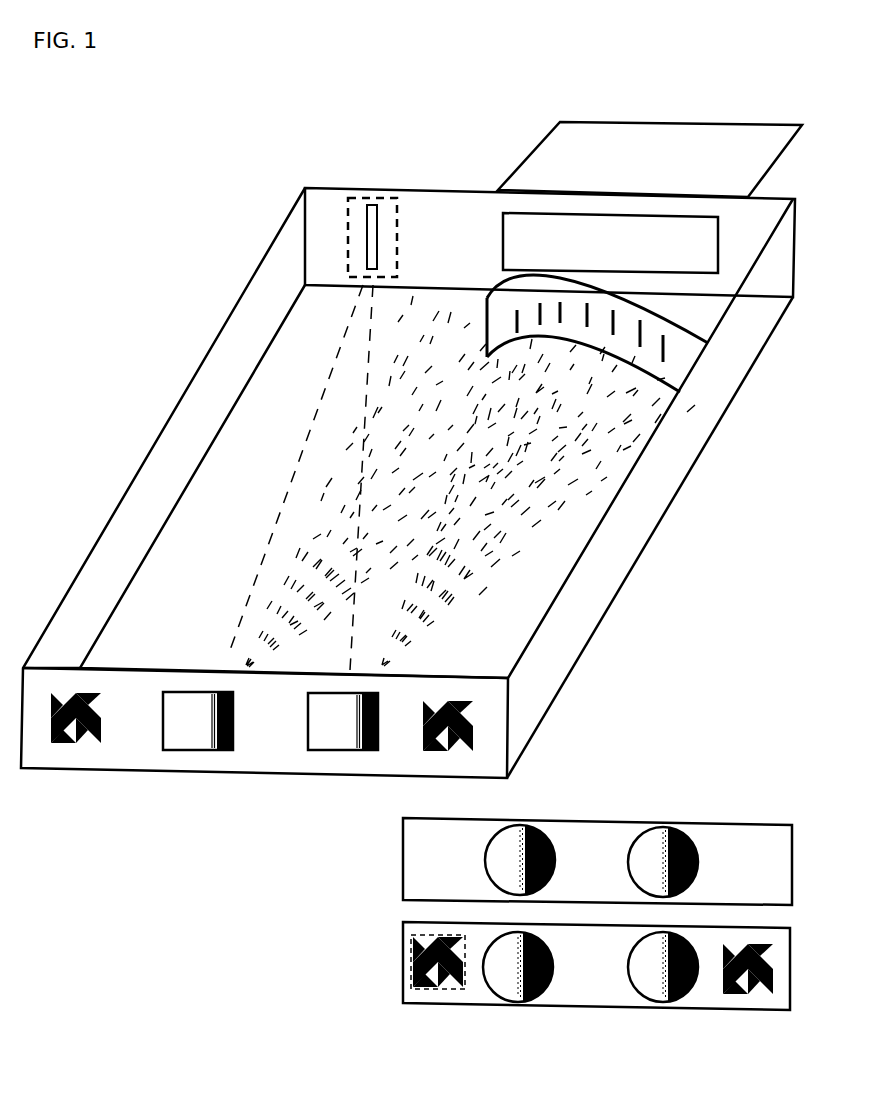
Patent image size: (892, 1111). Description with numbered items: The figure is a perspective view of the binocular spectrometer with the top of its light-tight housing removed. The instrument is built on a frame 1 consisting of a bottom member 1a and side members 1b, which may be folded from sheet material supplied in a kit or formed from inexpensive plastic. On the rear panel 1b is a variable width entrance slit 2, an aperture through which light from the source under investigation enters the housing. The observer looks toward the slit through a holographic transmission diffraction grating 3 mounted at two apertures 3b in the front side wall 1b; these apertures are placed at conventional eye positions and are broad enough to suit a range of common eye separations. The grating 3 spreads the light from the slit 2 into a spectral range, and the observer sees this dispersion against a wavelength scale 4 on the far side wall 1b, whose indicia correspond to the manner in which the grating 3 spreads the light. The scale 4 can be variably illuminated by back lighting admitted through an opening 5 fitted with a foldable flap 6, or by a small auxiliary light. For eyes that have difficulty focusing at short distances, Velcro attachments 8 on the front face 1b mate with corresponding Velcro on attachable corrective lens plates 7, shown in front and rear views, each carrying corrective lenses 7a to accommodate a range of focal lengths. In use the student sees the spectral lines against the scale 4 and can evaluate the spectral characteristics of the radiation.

The frame 1 is at (408, 483).
The bottom member 1a is at (294, 481).
The side members 1b is at (97, 295).
The variable width entrance slit 2 is at (360, 218).
The holographic transmission diffraction grating 3 is at (286, 770).
The apertures 3b is at (235, 722).
The wavelength scale 4 is at (670, 365).
The opening 5 is at (550, 248).
The foldable flap 6 is at (582, 152).
The attachable corrective lens plates 7 is at (597, 896).
The corrective lenses 7a is at (484, 858).
The Velcro attachments 8 is at (404, 957).